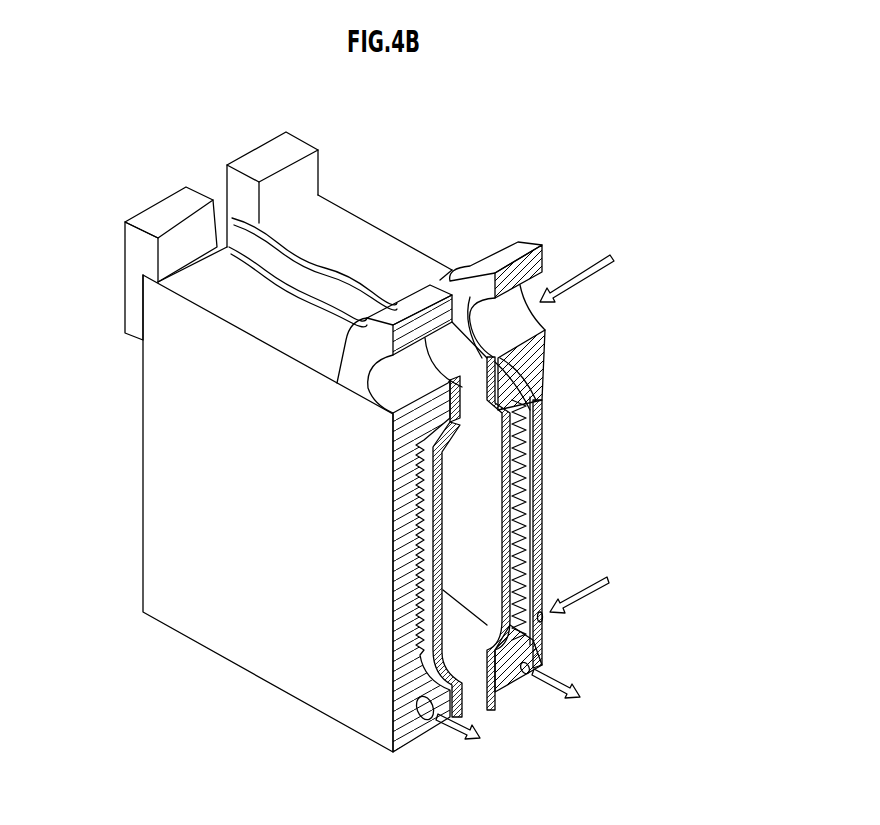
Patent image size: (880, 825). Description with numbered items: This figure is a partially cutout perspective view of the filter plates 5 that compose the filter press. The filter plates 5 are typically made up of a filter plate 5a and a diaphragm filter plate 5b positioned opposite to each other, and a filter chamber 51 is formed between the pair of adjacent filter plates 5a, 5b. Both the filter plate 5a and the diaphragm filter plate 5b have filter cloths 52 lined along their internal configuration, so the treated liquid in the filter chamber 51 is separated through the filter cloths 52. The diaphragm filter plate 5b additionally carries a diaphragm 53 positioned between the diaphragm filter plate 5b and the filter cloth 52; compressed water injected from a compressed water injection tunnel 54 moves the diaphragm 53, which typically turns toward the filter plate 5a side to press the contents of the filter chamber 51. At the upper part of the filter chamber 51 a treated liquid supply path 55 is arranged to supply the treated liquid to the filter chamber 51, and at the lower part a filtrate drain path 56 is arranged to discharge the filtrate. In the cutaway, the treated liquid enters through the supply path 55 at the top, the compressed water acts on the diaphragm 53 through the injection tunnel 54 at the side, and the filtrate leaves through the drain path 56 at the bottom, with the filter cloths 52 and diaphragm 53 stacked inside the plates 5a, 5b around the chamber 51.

The filter plate 5 is at (440, 192).
The filter plate 5a is at (163, 463).
The diaphragm filter plate 5b is at (542, 428).
The filter chamber 51 is at (475, 467).
The filter cloth 52 is at (495, 692).
The diaphragm 53 is at (527, 515).
The compressed water injection tunnel 54 is at (542, 618).
The treated liquid supply path 55 is at (540, 317).
The filtrate drain path 56 is at (532, 667).